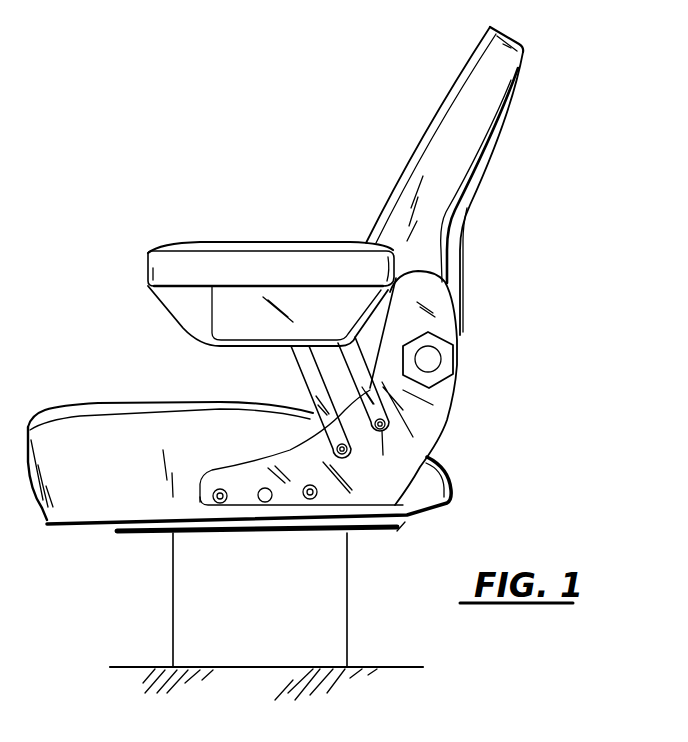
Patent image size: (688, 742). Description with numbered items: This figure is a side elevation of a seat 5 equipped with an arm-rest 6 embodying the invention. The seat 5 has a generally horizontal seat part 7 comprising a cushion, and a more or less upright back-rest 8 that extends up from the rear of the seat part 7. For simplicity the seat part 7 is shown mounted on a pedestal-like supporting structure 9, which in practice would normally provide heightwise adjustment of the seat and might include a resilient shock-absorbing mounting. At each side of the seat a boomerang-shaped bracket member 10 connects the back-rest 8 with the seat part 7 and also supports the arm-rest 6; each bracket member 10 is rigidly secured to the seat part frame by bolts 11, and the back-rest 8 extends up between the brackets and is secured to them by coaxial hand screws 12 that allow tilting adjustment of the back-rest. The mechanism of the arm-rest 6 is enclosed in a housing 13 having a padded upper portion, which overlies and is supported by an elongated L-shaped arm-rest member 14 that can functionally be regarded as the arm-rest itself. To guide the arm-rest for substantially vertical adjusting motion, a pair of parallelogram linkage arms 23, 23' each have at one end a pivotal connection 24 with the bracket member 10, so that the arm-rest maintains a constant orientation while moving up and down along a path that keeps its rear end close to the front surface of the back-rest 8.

The seat 5 is at (128, 260).
The arm-rest 6 is at (277, 242).
The seat part 7 is at (128, 403).
The back-rest 8 is at (430, 118).
The supporting structure 9 is at (173, 576).
The bracket member 10 is at (428, 431).
The bolts 11 is at (305, 486).
The hand screws 12 is at (450, 360).
The housing 13 is at (240, 336).
The arm-rest member 14 is at (170, 318).
The parallelogram linkage arm 23 is at (300, 402).
The parallelogram linkage arm 23' is at (418, 396).
The pivotal connection 24 is at (352, 452).